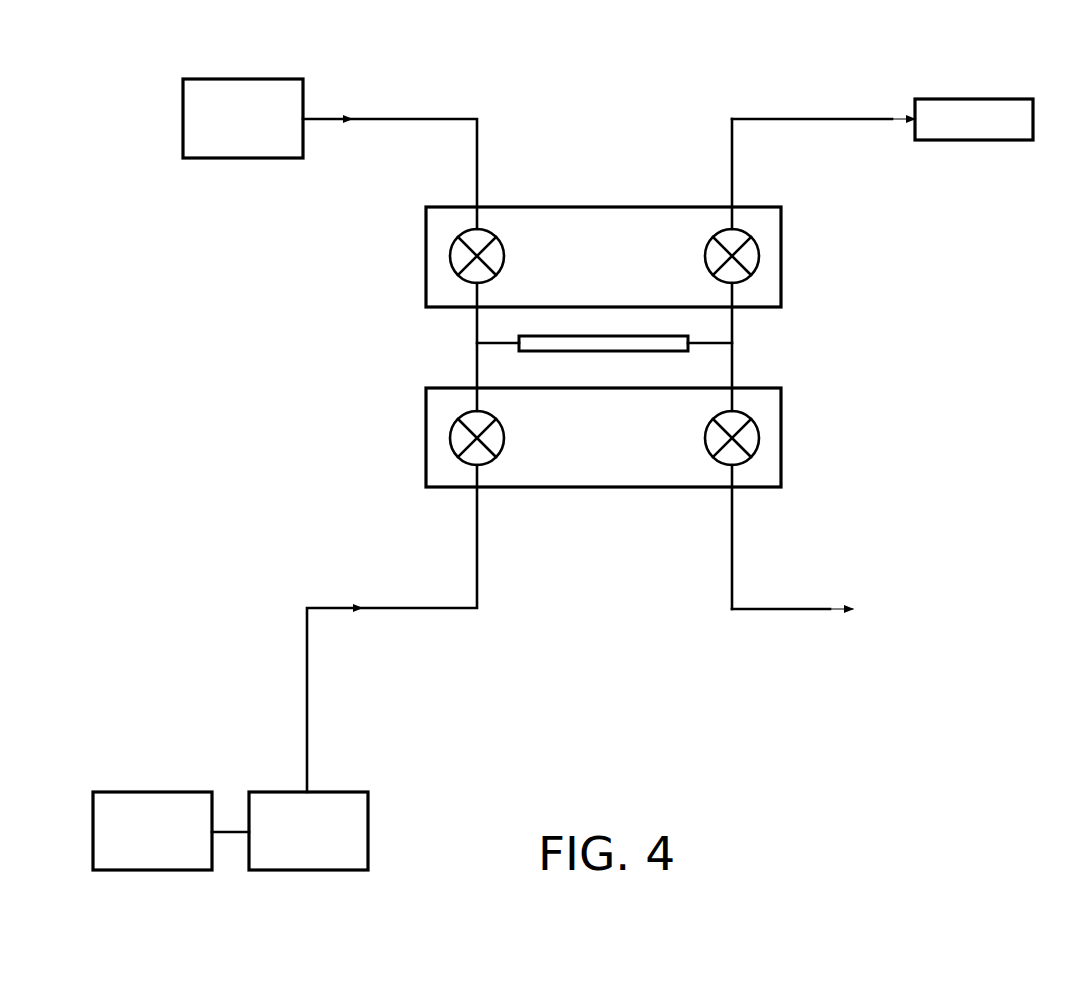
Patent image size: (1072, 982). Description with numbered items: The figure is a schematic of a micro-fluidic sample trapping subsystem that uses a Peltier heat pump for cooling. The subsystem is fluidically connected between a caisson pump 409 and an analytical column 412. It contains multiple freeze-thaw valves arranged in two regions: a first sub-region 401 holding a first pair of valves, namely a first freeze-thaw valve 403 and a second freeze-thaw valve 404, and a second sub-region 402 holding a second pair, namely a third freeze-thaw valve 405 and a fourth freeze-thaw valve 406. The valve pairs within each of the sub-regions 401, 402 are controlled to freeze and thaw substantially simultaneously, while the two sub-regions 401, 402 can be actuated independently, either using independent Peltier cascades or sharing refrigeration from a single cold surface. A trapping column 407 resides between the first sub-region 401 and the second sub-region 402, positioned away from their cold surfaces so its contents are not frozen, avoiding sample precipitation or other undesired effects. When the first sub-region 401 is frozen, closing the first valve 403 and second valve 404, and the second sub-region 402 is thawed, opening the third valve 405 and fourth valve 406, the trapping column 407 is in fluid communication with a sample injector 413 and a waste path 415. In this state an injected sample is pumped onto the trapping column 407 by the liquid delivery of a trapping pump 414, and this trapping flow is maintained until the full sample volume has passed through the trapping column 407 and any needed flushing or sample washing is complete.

The first sub-region 401 is at (781, 245).
The second sub-region 402 is at (781, 427).
The first freeze-thaw valve 403 is at (734, 240).
The second freeze-thaw valve 404 is at (479, 240).
The third freeze-thaw valve 405 is at (734, 422).
The fourth freeze-thaw valve 406 is at (479, 422).
The trapping column 407 is at (680, 336).
The caisson pump 409 is at (275, 79).
The analytical column 412 is at (998, 99).
The sample injector 413 is at (310, 870).
The trapping pump 414 is at (155, 870).
The waste path 415 is at (800, 611).